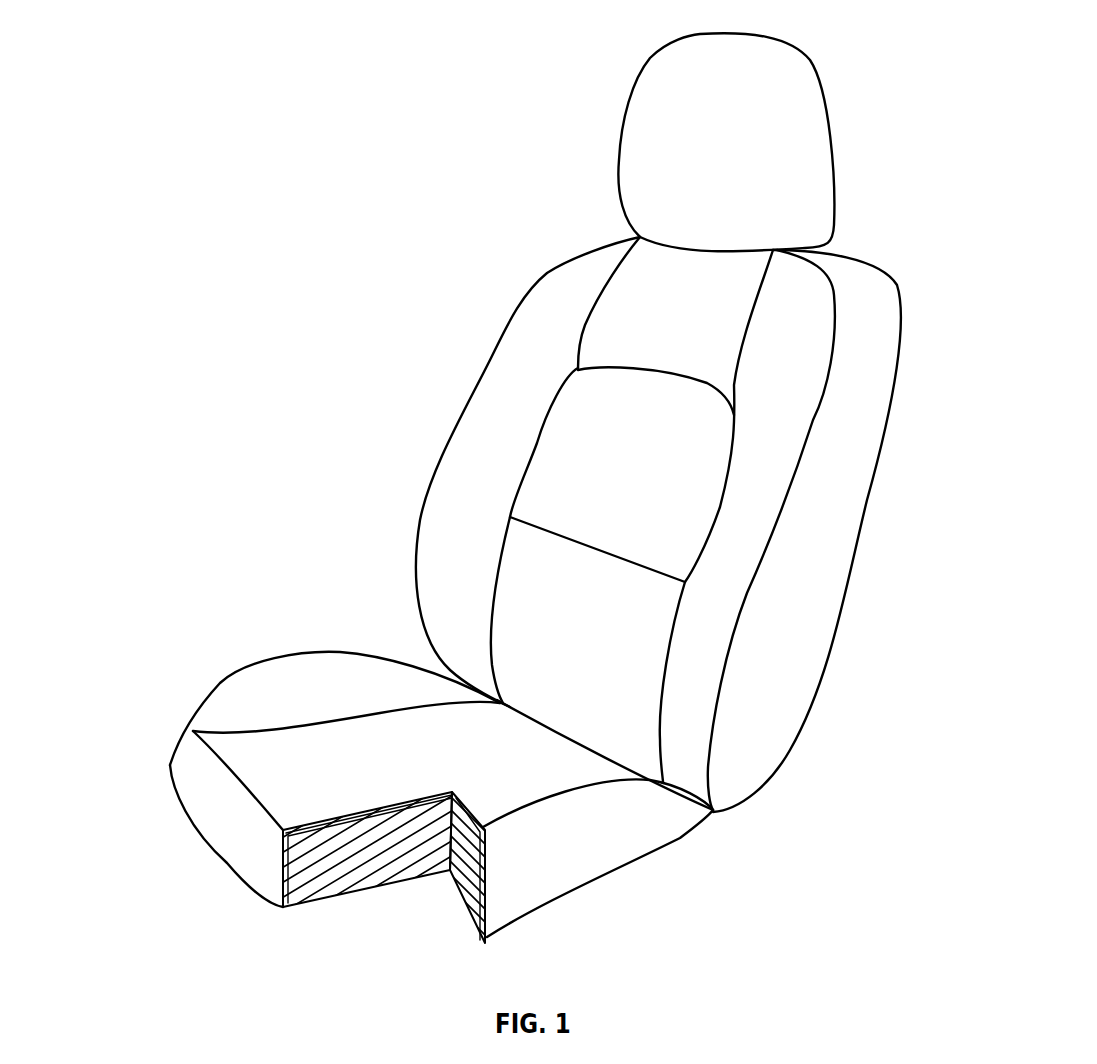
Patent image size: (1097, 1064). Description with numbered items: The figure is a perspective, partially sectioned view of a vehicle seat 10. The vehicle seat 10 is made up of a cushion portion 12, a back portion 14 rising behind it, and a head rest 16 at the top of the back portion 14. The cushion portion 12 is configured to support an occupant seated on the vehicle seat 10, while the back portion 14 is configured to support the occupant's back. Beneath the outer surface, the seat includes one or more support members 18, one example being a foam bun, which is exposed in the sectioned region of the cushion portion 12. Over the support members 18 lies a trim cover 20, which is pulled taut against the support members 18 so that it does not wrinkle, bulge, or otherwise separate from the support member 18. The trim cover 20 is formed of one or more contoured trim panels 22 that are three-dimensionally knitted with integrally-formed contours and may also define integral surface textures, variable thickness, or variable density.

The vehicle seat 10 is at (398, 97).
The cushion portion 12 is at (299, 670).
The back portion 14 is at (485, 441).
The head rest 16 is at (774, 82).
The support member 18 is at (323, 882).
The trim cover 20 is at (420, 803).
The contoured trim panel 22 is at (593, 442).